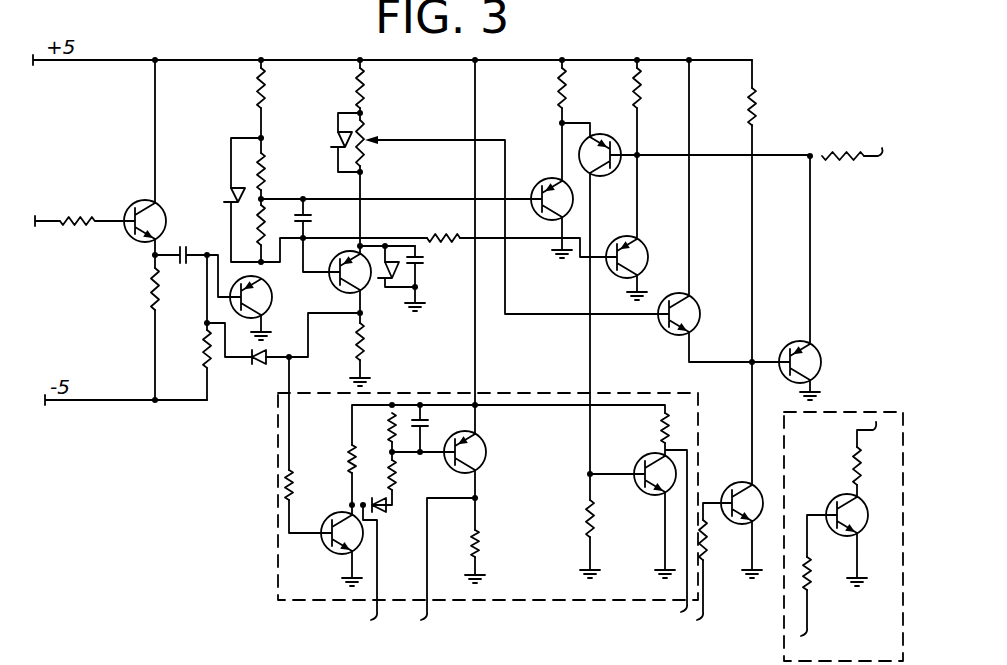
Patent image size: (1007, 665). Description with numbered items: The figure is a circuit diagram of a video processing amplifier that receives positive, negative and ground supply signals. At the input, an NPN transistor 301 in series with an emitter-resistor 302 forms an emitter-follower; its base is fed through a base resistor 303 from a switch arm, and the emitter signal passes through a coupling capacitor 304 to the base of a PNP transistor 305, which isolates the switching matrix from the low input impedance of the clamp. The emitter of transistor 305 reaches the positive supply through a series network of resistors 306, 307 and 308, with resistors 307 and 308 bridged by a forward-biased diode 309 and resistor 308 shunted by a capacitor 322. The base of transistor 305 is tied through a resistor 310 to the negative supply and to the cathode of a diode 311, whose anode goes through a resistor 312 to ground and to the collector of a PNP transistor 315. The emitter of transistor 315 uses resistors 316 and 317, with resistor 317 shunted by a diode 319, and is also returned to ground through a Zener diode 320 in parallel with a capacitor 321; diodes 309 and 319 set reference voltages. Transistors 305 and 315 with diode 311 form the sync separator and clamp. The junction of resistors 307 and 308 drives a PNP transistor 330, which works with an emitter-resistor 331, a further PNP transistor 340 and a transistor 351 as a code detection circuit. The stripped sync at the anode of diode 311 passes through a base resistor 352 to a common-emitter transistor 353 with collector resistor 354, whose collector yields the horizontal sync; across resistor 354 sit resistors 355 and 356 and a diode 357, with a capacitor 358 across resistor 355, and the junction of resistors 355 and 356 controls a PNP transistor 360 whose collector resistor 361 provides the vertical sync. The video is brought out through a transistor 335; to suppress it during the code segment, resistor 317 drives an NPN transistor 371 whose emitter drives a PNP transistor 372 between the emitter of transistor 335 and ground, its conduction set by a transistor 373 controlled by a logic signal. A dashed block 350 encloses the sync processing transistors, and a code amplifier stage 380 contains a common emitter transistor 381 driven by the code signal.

The transistor 301 is at (140, 242).
The emitter-resistor 302 is at (152, 292).
The base resistor 303 is at (80, 216).
The coupling capacitor 304 is at (186, 246).
The PNP transistor 305 is at (230, 304).
The resistor 306 is at (258, 100).
The resistor 307 is at (265, 174).
The resistor 308 is at (266, 218).
The diode 309 is at (223, 196).
The resistor 310 is at (204, 342).
The diode 311 is at (256, 362).
The resistor 312 is at (364, 336).
The PNP transistor 315 is at (331, 288).
The resistor 316 is at (365, 86).
The resistor 317 is at (369, 136).
The diode 319 is at (332, 140).
The Zener diode 320 is at (387, 260).
The capacitor 321 is at (418, 267).
The capacitor 322 is at (313, 208).
The PNP transistor 330 is at (544, 185).
The emitter-resistor 331 is at (559, 90).
The transistor 335 is at (660, 230).
The PNP transistor 340 is at (606, 136).
The oscillator circuit 350 is at (532, 392).
The transistor 351 is at (640, 494).
The base resistor 352 is at (283, 488).
The transistor 353 is at (326, 550).
The collector resistor 354 is at (344, 462).
The resistor 355 is at (387, 424).
The resistor 356 is at (396, 477).
The diode 357 is at (388, 516).
The capacitor 358 is at (422, 404).
The PNP transistor 360 is at (486, 456).
The collector resistor 361 is at (480, 536).
The NPN transistor 371 is at (715, 299).
The PNP transistor 372 is at (836, 341).
The transistor 373 is at (722, 490).
The code amplifier stage 380 is at (868, 412).
The common emitter transistor 381 is at (842, 500).